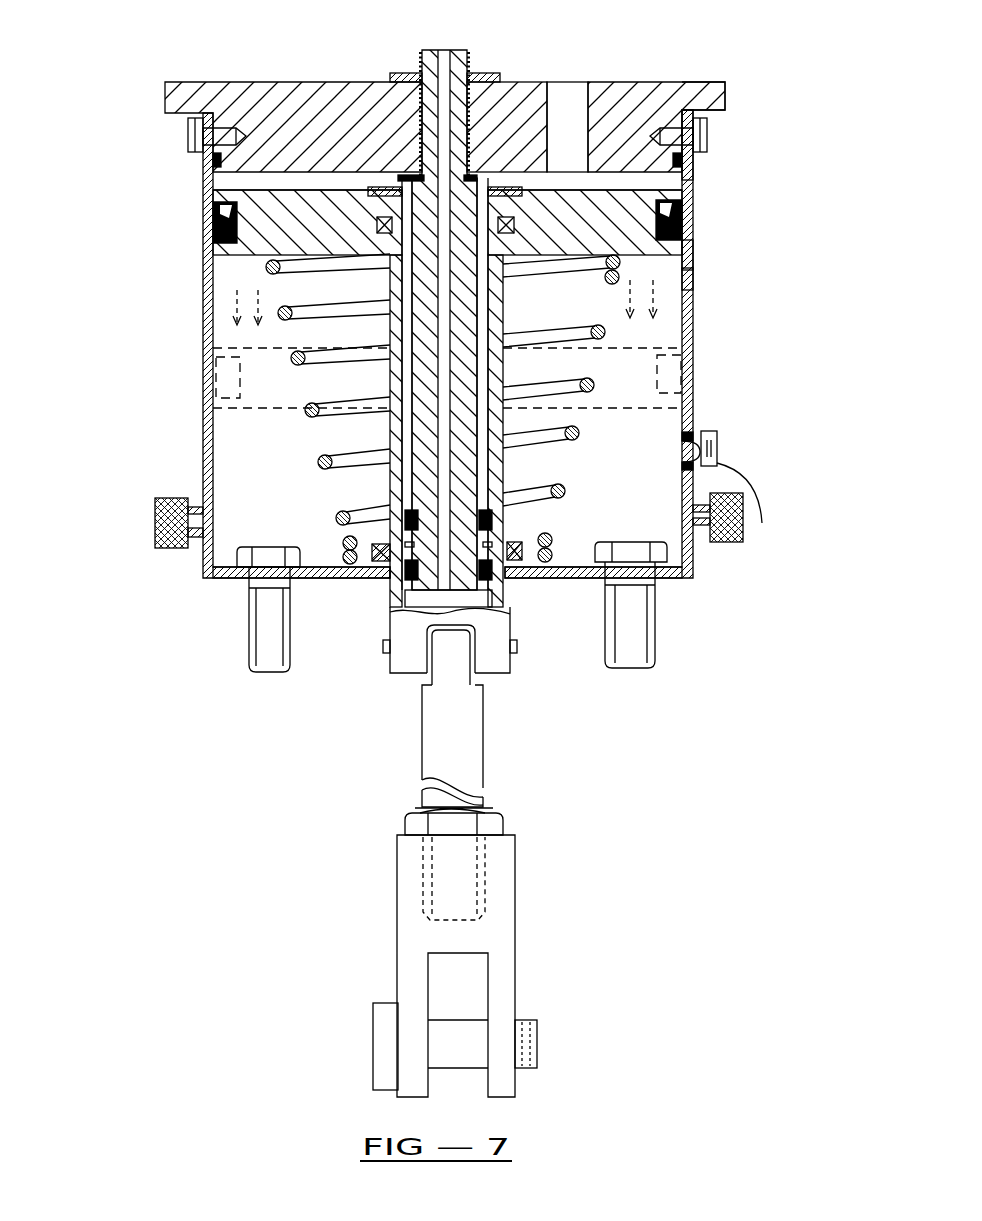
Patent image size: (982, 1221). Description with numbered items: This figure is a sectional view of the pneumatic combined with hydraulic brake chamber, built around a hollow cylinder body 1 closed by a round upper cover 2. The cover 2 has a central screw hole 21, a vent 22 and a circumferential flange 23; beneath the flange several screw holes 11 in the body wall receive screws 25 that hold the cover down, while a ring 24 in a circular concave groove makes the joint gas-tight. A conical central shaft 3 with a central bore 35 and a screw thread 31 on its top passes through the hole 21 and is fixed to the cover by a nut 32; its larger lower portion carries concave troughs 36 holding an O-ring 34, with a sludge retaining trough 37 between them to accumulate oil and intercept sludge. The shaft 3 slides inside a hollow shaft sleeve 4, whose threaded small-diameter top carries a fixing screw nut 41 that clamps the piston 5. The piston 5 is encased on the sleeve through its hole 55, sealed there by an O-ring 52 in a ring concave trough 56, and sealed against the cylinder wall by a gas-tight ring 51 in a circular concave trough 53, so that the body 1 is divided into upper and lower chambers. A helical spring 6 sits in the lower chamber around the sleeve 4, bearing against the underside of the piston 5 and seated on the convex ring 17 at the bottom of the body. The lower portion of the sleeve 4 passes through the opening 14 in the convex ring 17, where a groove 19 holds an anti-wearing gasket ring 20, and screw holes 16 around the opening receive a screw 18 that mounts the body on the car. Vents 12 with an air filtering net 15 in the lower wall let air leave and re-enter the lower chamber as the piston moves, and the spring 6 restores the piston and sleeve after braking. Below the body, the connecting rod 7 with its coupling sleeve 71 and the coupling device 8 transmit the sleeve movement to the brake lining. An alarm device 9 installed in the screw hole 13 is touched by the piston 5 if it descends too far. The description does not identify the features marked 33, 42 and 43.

The cylinder body 1 is at (203, 278).
The upper cover 2 is at (282, 93).
The central shaft 3 is at (402, 192).
The shaft sleeve 4 is at (393, 308).
The piston 5 is at (247, 210).
The helical spring 6 is at (320, 265).
The connecting rod 7 is at (437, 723).
The coupling device 8 is at (397, 900).
The alarm device 9 is at (713, 450).
The screw holes 11 is at (695, 155).
The vents 12 is at (187, 548).
The screw hole 13 is at (693, 431).
The opening 14 is at (508, 577).
The air filtering net 15 is at (162, 533).
The screw holes 16 is at (243, 580).
The convex ring 17 is at (530, 552).
The screw 18 is at (262, 632).
The groove 19 is at (552, 535).
The anti-wearing gasket ring 20 is at (555, 549).
The screw hole 21 is at (392, 73).
The vent 22 is at (597, 82).
The flange 23 is at (712, 82).
The ring 24 is at (693, 178).
The screws 25 is at (707, 127).
The screw thread 31 is at (465, 53).
The nut 32 is at (495, 73).
The opening 33 is at (562, 82).
The O-ring 34 is at (483, 590).
The central bore 35 is at (447, 592).
The concave troughs 36 is at (407, 522).
The sludge retaining trough 37 is at (403, 557).
The fixing screw nut 41 is at (690, 278).
The recess 42 is at (392, 657).
The rod neck 43 is at (420, 677).
The gas-tight ring 51 is at (695, 258).
The O-ring 52 is at (627, 290).
The circular concave trough 53 is at (693, 232).
The hole 55 is at (385, 178).
The ring concave trough 56 is at (607, 260).
The coupling sleeve 71 is at (383, 653).